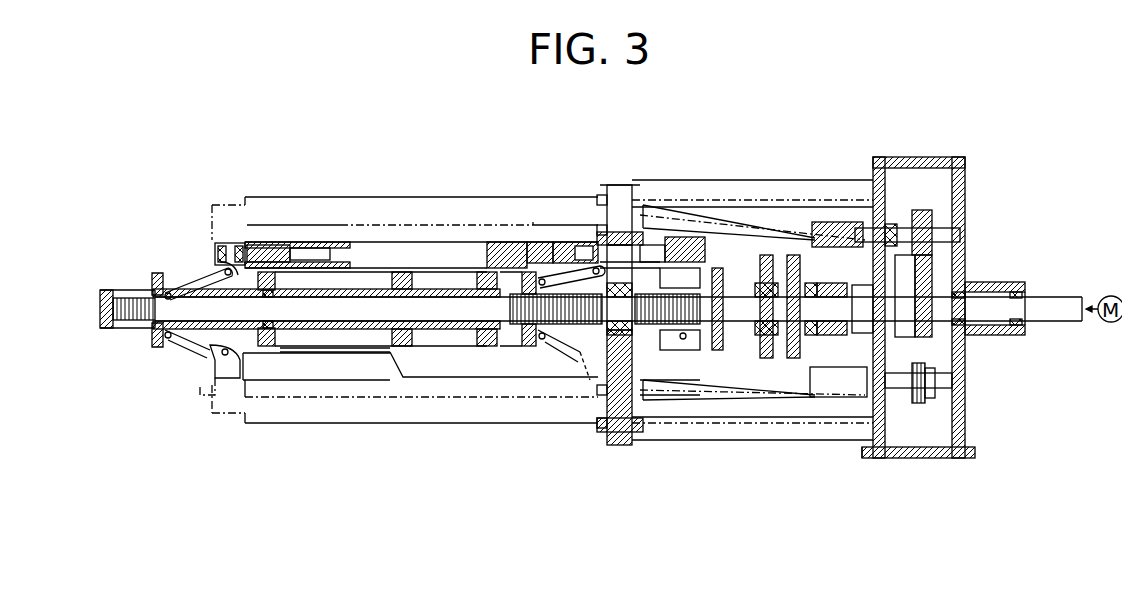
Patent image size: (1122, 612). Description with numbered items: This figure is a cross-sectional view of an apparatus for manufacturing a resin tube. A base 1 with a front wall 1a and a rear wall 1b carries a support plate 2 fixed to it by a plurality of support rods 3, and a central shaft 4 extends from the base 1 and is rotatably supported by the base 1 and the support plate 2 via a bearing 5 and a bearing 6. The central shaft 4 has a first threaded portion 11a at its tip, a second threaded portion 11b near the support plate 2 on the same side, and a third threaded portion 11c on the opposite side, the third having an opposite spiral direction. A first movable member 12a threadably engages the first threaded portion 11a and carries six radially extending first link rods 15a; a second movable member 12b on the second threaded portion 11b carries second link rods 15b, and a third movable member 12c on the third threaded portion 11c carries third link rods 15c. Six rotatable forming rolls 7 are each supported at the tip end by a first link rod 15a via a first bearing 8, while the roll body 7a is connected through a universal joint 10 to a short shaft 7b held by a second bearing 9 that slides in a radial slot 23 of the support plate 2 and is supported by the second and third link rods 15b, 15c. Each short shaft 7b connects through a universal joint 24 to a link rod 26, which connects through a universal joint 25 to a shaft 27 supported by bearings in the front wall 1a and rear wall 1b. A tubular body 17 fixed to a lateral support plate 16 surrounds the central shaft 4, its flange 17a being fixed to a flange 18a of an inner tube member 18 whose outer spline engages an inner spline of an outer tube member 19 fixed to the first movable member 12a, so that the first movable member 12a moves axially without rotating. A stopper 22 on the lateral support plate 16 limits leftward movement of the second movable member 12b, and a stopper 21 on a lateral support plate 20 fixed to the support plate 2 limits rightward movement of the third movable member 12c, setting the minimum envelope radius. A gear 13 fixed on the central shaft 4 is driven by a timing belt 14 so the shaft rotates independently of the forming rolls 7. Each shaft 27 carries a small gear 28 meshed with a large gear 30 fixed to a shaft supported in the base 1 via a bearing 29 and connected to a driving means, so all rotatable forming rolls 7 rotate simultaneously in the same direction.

The base 1 is at (965, 175).
The front wall 1a is at (878, 280).
The rear wall 1b is at (965, 405).
The support plate 2 is at (612, 186).
The support rods 3 is at (790, 205).
The central shaft 4 is at (358, 382).
The bearing 5 is at (855, 410).
The bearing 6 is at (590, 390).
The rotatable forming rolls 7 is at (425, 247).
The roll body 7a is at (490, 243).
The short shaft 7b is at (665, 240).
The first bearing 8 is at (218, 246).
The second bearing 9 is at (592, 260).
The universal joint 10 is at (562, 262).
The first threaded portion 11a is at (135, 328).
The second threaded portion 11b is at (500, 385).
The third threaded portion 11c is at (735, 395).
The first movable member 12a is at (165, 340).
The second movable member 12b is at (545, 385).
The third movable member 12c is at (690, 395).
The gear 13 is at (797, 268).
The timing belt 14 is at (808, 265).
The first link rods 15a is at (185, 282).
The second link rods 15b is at (533, 270).
The third link rods 15c is at (700, 280).
The lateral support plate 16 is at (445, 255).
The tubular body 17 is at (362, 272).
The flange 17a is at (288, 392).
The inner tube member 18 is at (212, 352).
The flange 18a is at (262, 392).
The outer tube member 19 is at (185, 340).
The lateral support plate 20 is at (770, 400).
The stopper 21 is at (722, 272).
The stopper 22 is at (505, 282).
The radial slot 23 is at (640, 245).
The universal joint 24 is at (735, 290).
The universal joint 25 is at (842, 222).
The link rod 26 is at (762, 275).
The shaft 27 is at (897, 238).
The small gear 28 is at (928, 230).
The bearing 29 is at (1003, 282).
The large gear 30 is at (932, 270).